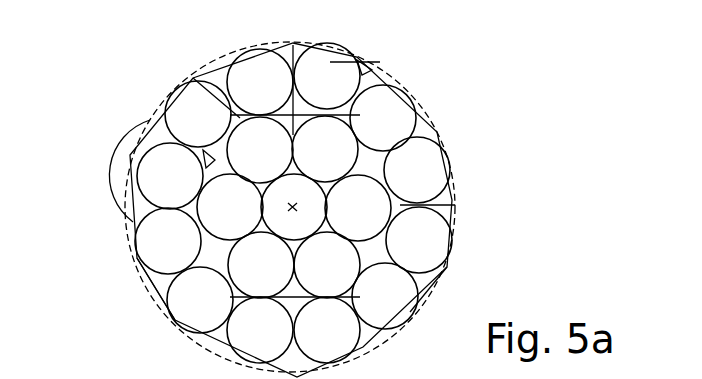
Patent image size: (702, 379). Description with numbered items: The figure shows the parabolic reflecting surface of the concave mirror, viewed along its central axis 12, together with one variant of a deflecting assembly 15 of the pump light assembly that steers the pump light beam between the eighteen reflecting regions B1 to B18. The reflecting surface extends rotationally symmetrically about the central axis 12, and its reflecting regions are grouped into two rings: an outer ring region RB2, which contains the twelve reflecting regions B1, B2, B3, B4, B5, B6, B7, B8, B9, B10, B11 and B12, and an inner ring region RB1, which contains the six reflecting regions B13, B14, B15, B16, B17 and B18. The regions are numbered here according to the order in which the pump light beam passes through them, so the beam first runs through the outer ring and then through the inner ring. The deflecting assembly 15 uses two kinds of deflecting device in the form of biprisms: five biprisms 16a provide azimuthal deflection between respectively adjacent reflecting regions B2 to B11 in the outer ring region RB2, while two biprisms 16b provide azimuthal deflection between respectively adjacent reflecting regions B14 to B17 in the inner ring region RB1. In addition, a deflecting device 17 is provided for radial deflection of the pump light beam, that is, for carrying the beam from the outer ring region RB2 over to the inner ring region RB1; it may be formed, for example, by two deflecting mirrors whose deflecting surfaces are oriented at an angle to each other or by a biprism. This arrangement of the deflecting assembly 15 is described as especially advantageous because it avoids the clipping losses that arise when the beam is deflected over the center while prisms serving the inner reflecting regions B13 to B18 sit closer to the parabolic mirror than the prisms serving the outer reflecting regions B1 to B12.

The central axis 12 is at (193, 78).
The deflecting assembly 15 is at (472, 104).
The biprism 16a is at (447, 277).
The biprism 16b is at (143, 274).
The deflecting device 17 is at (123, 142).
The inner ring region RB1 is at (203, 155).
The outer ring region RB2 is at (368, 66).
The reflecting region B1 is at (417, 170).
The reflecting region B2 is at (168, 241).
The reflecting region B3 is at (174, 250).
The reflecting region B4 is at (383, 118).
The reflecting region B5 is at (375, 110).
The reflecting region B6 is at (260, 330).
The reflecting region B7 is at (270, 330).
The reflecting region B8 is at (208, 117).
The reflecting region B9 is at (198, 114).
The reflecting region B10 is at (385, 296).
The reflecting region B11 is at (390, 290).
The reflecting region B12 is at (170, 176).
The reflecting region B13 is at (230, 207).
The reflecting region B14 is at (358, 208).
The reflecting region B15 is at (353, 198).
The reflecting region B16 is at (261, 265).
The reflecting region B17 is at (268, 265).
The reflecting region B18 is at (292, 206).